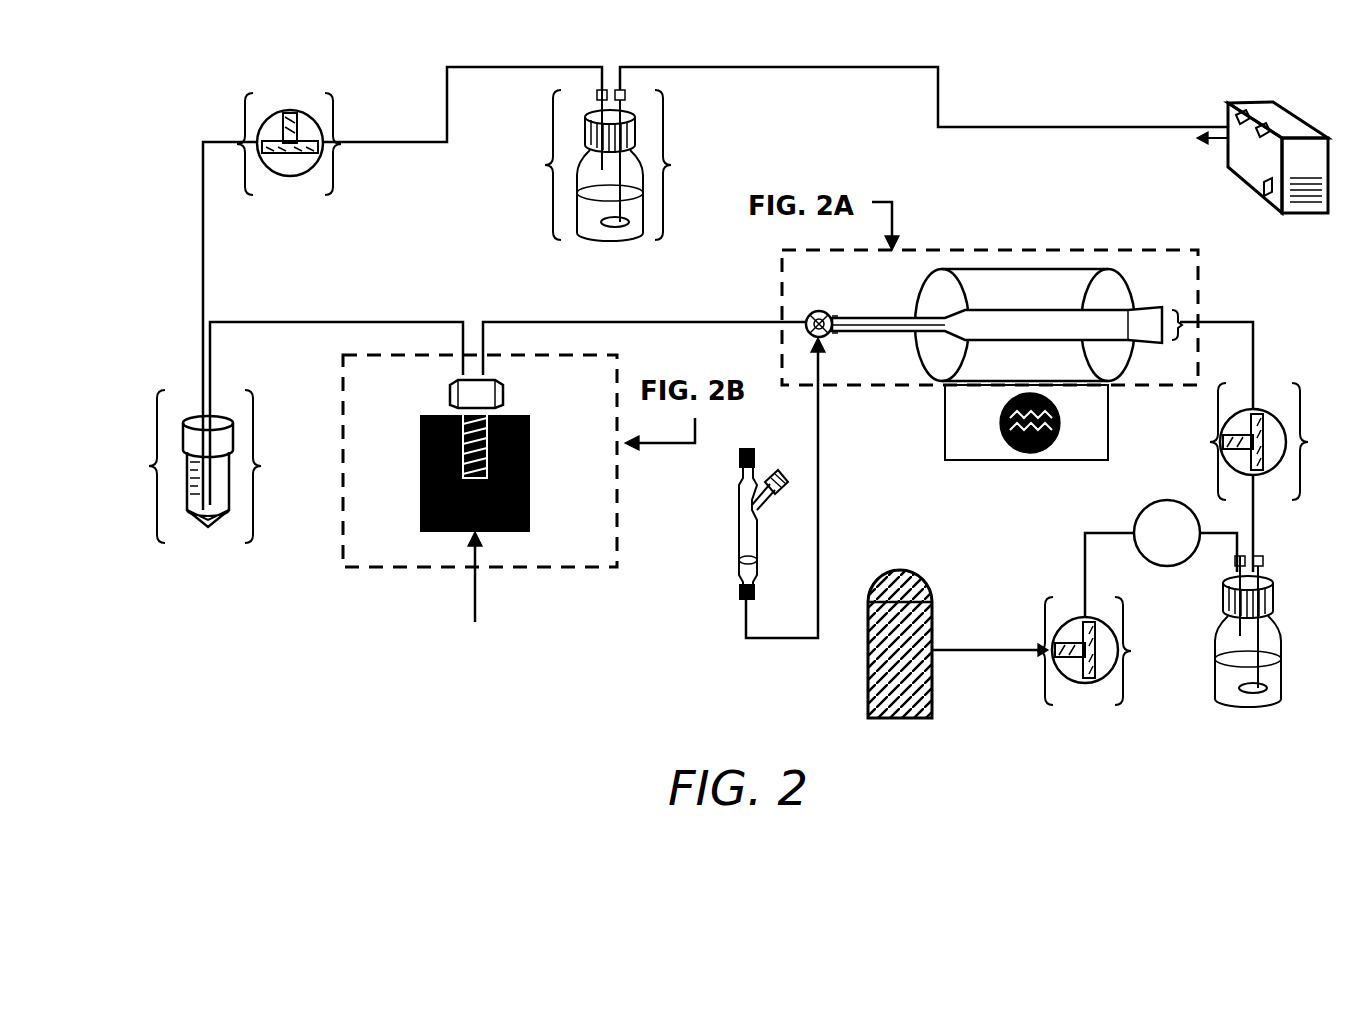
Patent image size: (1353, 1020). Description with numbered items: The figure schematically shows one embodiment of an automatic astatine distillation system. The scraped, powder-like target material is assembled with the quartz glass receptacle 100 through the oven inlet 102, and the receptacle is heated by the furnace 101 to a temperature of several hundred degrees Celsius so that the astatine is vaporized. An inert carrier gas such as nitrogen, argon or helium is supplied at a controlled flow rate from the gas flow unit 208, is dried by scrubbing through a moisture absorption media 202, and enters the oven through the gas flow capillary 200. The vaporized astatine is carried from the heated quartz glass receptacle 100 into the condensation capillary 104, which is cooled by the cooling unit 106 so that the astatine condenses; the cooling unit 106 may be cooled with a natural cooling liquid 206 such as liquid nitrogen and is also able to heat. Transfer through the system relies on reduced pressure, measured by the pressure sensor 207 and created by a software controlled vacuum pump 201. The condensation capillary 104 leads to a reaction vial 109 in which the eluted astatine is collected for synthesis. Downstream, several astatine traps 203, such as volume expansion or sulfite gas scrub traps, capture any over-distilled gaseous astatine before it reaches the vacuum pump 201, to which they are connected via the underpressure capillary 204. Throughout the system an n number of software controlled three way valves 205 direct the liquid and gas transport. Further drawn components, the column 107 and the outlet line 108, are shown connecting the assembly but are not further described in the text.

The quartz glass receptacle 100 is at (994, 325).
The furnace 101 is at (1026, 441).
The oven inlet 102 is at (1058, 324).
The condensation capillary 104 is at (509, 393).
The cooling unit 106 is at (475, 456).
The column 107 is at (730, 524).
The outlet line 108 is at (818, 488).
The reaction vial 109 is at (214, 475).
The gas flow capillary 200 is at (1255, 443).
The vacuum pump 201 is at (1278, 182).
The moisture absorption media 202 is at (1219, 631).
The astatine traps 203 is at (615, 183).
The underpressure capillary 204 is at (402, 288).
The software controlled three way valves 205 is at (782, 396).
The natural cooling liquid 206 is at (508, 579).
The pressure sensor 207 is at (1161, 542).
The gas flow unit 208 is at (958, 644).